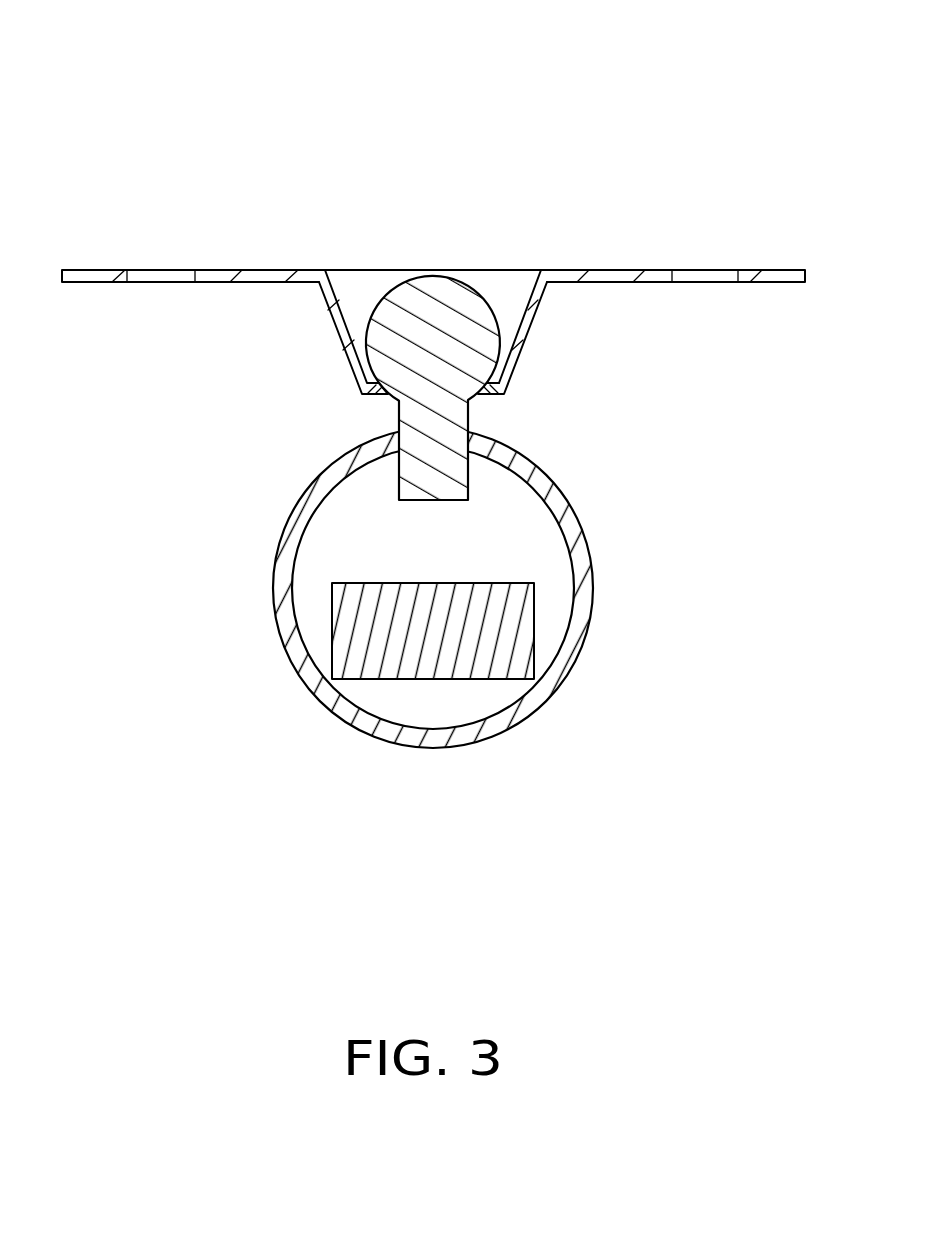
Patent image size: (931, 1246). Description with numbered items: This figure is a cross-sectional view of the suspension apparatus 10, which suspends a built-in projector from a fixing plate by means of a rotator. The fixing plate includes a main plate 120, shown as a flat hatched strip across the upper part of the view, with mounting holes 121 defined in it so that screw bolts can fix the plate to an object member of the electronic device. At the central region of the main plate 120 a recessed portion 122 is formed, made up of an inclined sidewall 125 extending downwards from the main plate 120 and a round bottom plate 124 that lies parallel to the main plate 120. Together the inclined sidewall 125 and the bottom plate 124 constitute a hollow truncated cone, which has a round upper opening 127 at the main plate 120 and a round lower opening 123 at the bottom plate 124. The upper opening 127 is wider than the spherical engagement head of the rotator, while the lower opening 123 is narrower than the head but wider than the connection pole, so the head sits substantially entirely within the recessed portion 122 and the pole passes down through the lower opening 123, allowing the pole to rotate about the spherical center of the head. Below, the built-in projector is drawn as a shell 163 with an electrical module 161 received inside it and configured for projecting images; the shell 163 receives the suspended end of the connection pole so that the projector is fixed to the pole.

The suspension apparatus 10 is at (440, 41).
The main plate 120 is at (782, 275).
The mounting holes 121 is at (703, 275).
The recessed portion 122 is at (498, 338).
The lower opening 123 is at (380, 404).
The bottom plate 124 is at (495, 396).
The inclined sidewall 125 is at (518, 337).
The upper opening 127 is at (506, 273).
The electrical module 161 is at (523, 623).
The shell 163 is at (563, 518).